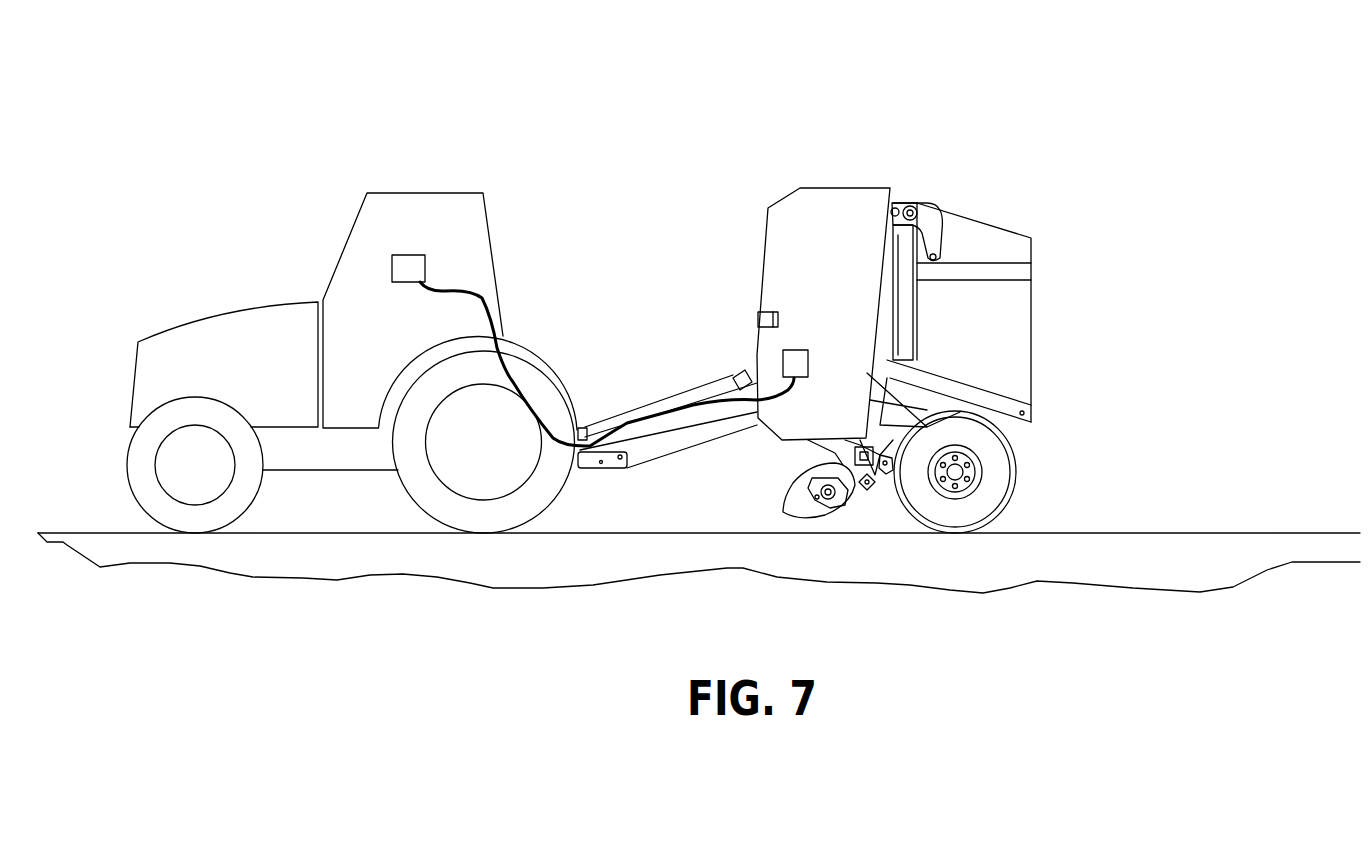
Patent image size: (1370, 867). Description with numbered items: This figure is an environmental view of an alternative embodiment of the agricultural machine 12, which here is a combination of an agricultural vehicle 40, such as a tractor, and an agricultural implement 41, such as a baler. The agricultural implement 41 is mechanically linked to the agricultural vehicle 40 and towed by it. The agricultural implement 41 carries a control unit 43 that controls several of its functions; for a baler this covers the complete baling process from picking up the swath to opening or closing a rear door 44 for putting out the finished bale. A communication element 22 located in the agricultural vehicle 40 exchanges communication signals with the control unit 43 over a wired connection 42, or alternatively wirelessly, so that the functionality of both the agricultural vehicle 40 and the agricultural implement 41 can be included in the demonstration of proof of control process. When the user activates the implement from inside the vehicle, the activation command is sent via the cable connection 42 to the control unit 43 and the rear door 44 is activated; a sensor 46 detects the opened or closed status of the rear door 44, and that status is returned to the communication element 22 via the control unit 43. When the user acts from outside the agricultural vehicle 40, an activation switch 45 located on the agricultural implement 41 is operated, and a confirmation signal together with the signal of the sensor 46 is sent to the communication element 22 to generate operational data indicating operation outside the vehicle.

The agricultural machine 12 is at (663, 100).
The agricultural vehicle 40 is at (300, 220).
The communication element 22 is at (417, 265).
The wired connection 42 is at (513, 375).
The agricultural implement 41 is at (1030, 190).
The control unit 43 is at (758, 367).
The activation switch 45 is at (757, 317).
The sensor 46 is at (920, 205).
The rear door 44 is at (1012, 347).